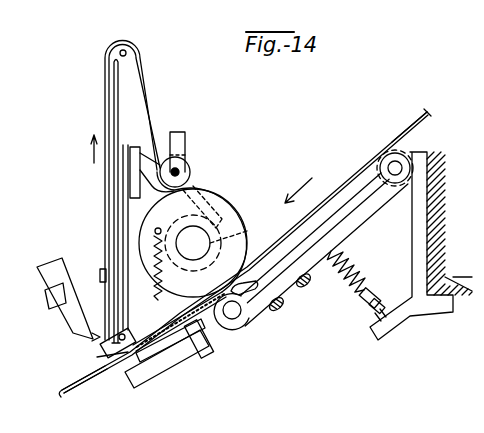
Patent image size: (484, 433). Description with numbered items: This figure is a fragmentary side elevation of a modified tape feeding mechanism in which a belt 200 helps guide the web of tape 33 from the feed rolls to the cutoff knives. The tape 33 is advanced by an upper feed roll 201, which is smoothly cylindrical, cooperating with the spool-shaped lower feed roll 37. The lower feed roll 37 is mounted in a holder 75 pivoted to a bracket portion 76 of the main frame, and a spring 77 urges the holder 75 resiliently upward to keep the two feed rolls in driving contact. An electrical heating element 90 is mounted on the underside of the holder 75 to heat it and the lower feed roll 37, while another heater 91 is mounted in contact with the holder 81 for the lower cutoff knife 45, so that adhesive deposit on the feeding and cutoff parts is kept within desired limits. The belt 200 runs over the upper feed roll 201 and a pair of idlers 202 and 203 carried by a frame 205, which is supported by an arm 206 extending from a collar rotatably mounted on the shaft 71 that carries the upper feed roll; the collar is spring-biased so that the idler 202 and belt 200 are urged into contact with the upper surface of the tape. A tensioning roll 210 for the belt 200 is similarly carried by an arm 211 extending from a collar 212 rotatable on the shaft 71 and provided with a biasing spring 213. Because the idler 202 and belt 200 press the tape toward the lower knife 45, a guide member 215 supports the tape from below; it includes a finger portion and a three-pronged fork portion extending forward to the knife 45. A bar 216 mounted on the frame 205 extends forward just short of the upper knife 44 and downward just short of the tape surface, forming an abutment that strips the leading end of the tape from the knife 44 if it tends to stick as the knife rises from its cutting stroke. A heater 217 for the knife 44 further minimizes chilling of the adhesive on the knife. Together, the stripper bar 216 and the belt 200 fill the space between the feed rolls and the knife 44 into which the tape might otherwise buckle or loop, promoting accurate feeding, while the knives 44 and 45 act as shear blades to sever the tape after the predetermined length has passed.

The web of tape 33 is at (405, 123).
The lower feed roll 37 is at (251, 333).
The cutoff knife 44 is at (55, 260).
The cutoff knife 45 is at (103, 388).
The shaft 71 is at (462, 276).
The holder 75 is at (346, 184).
The bracket portion 76 is at (415, 204).
The spring 77 is at (356, 248).
The holder 81 is at (167, 373).
The electrical heating element 90 is at (146, 388).
The heater 91 is at (295, 300).
The belt 200 is at (146, 79).
The upper feed roll 201 is at (232, 203).
The idler 202 is at (96, 335).
The idler 203 is at (118, 47).
The frame 205 is at (122, 96).
The arm 206 is at (150, 130).
The tensioning roll 210 is at (190, 160).
The arm 211 is at (191, 175).
The collar 212 is at (246, 231).
The biasing spring 213 is at (147, 283).
The guide member 215 is at (208, 352).
The bar 216 is at (97, 358).
The heater 217 is at (48, 296).